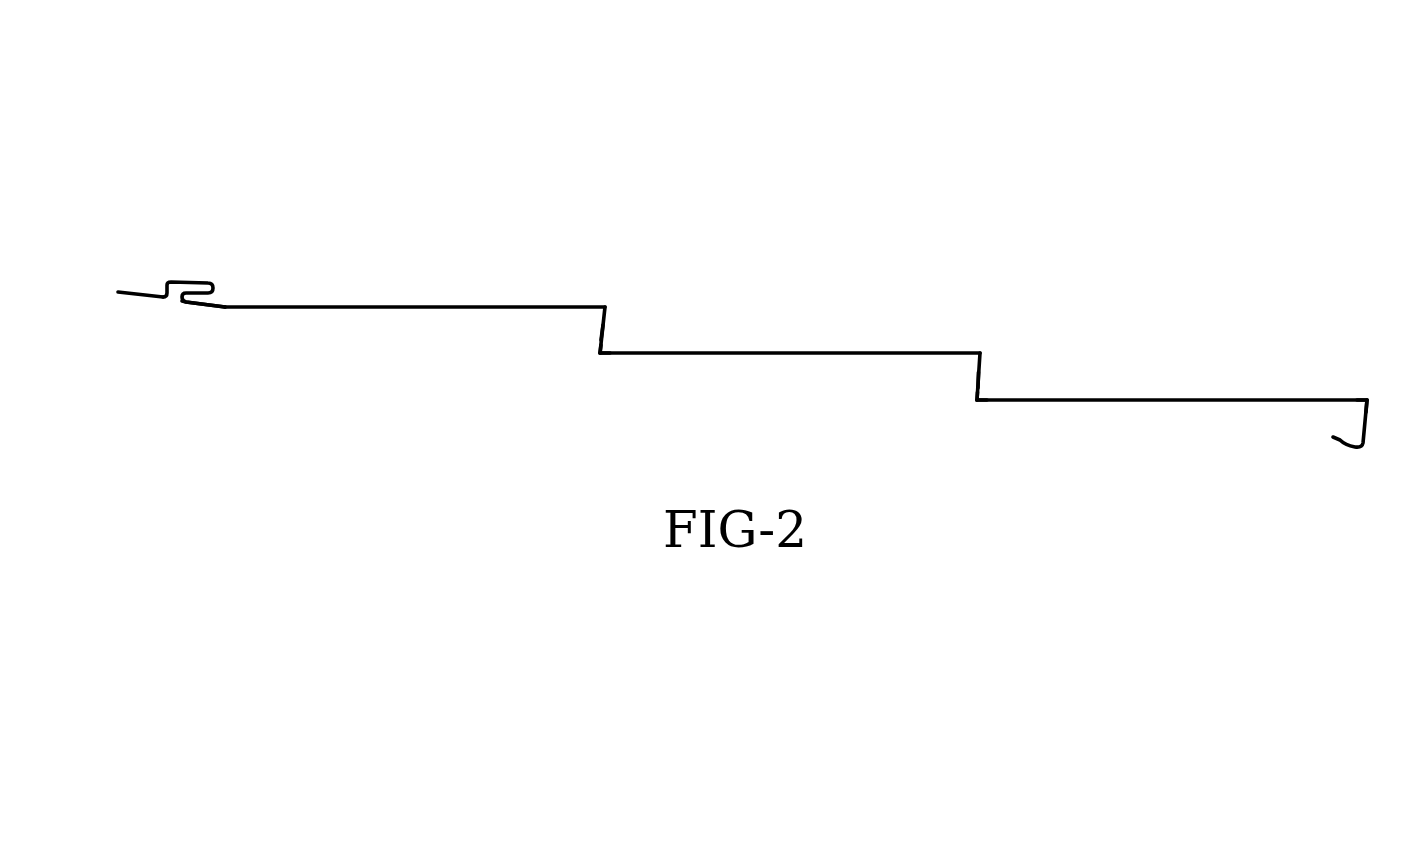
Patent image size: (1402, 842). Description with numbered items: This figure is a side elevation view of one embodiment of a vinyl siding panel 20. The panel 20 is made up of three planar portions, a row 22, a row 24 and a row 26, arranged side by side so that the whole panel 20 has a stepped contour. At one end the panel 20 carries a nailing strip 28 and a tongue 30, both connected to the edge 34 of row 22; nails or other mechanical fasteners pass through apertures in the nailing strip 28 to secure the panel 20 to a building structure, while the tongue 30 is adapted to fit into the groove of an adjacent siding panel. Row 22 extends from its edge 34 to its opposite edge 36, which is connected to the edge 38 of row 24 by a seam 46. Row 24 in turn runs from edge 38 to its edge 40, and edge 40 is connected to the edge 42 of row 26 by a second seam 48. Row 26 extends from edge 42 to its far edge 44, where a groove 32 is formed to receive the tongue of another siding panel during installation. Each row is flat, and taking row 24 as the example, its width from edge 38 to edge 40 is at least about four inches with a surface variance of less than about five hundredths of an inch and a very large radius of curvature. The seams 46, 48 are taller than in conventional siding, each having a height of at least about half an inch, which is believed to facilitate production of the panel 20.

The vinyl siding panel 20 is at (380, 122).
The row 22 is at (395, 308).
The row 24 is at (817, 354).
The row 26 is at (1200, 400).
The nailing strip 28 is at (135, 297).
The tongue 30 is at (190, 282).
The groove 32 is at (1365, 430).
The edge 34 is at (208, 305).
The edge 36 is at (605, 307).
The edge 38 is at (600, 353).
The edge 40 is at (980, 353).
The edge 42 is at (977, 400).
The edge 44 is at (1368, 395).
The seam 46 is at (601, 330).
The seam 48 is at (978, 378).